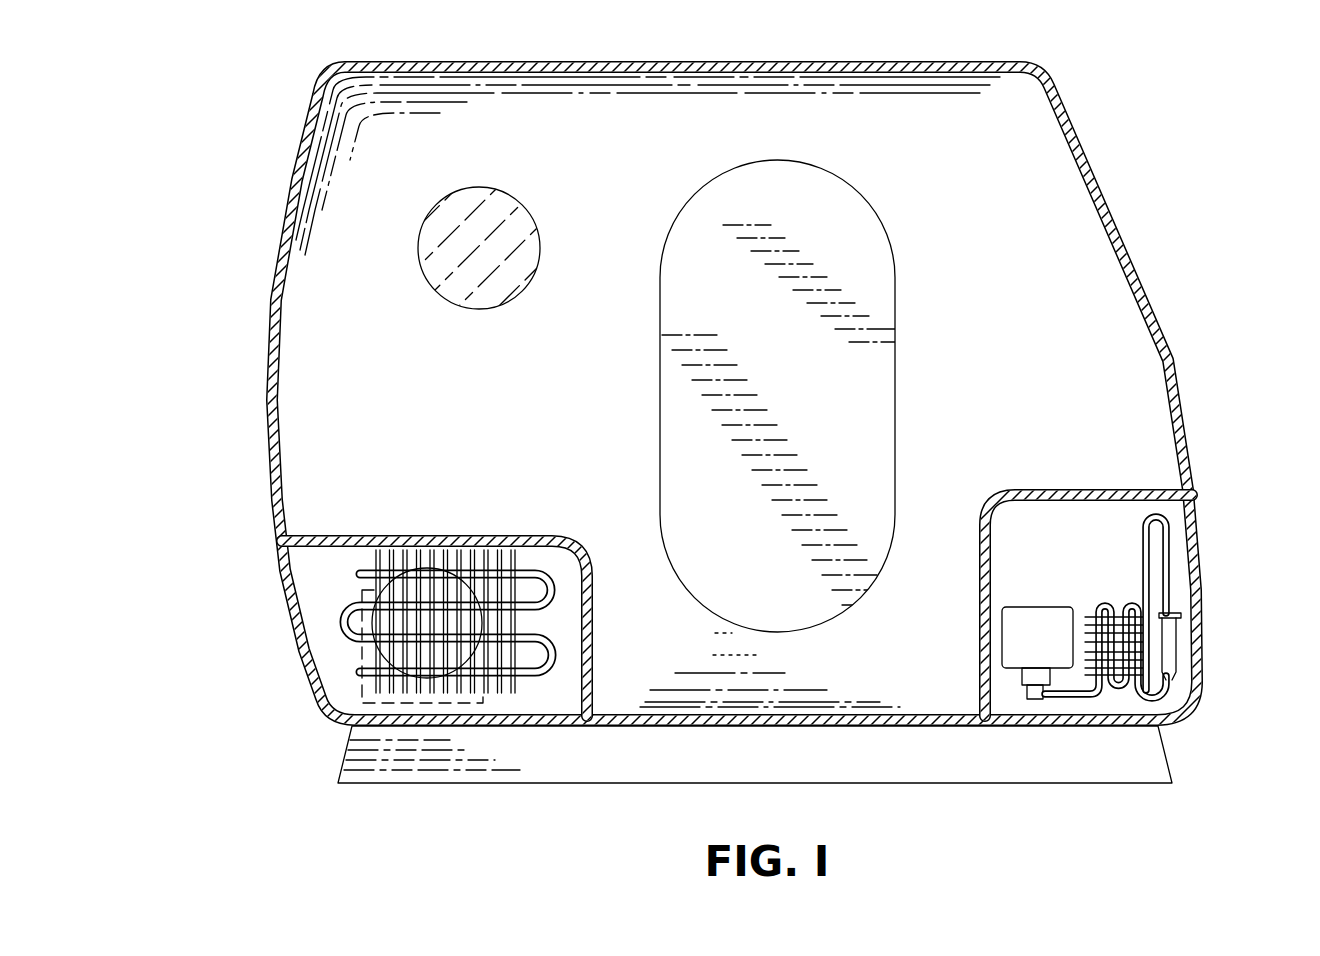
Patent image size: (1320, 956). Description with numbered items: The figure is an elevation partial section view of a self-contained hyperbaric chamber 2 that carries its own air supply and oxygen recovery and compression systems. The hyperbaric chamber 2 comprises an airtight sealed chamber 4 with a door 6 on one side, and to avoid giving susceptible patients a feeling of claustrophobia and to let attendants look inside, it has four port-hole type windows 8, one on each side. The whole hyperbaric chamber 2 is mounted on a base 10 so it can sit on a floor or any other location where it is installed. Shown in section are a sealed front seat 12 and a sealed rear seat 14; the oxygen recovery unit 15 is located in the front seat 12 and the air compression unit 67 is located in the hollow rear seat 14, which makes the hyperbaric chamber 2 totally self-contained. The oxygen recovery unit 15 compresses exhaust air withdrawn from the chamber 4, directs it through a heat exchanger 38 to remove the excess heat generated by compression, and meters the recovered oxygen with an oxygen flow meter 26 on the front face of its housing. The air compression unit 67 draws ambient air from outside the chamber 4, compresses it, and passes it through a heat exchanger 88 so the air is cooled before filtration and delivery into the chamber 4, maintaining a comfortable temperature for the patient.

The hyperbaric chamber 2 is at (732, 425).
The airtight sealed chamber 4 is at (696, 393).
The door 6 is at (853, 255).
The port-hole type windows 8 is at (280, 218).
The base 10 is at (1172, 753).
The sealed front seat 12 is at (1080, 567).
The sealed rear seat 14 is at (445, 596).
The oxygen recovery unit 15 is at (1022, 593).
The oxygen flow meter 26 is at (1172, 642).
The heat exchanger 38 is at (1114, 600).
The air compression unit 67 is at (360, 593).
The heat exchanger 88 is at (445, 626).